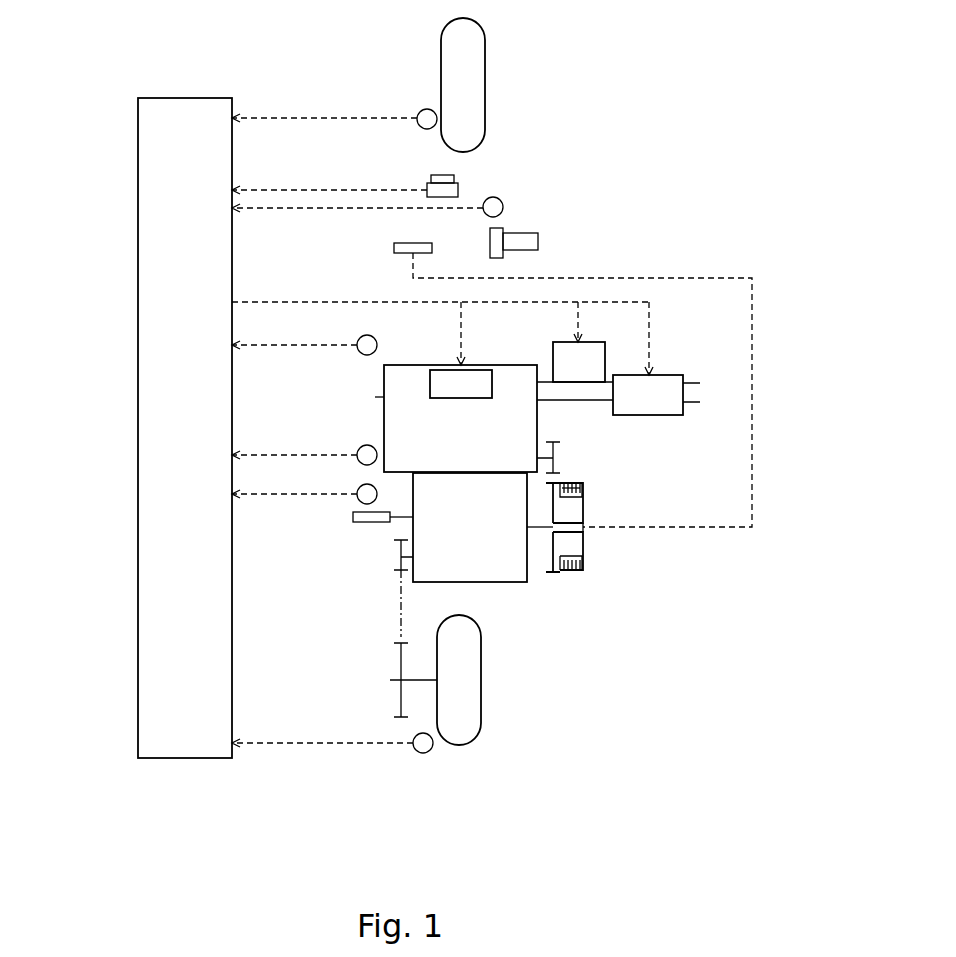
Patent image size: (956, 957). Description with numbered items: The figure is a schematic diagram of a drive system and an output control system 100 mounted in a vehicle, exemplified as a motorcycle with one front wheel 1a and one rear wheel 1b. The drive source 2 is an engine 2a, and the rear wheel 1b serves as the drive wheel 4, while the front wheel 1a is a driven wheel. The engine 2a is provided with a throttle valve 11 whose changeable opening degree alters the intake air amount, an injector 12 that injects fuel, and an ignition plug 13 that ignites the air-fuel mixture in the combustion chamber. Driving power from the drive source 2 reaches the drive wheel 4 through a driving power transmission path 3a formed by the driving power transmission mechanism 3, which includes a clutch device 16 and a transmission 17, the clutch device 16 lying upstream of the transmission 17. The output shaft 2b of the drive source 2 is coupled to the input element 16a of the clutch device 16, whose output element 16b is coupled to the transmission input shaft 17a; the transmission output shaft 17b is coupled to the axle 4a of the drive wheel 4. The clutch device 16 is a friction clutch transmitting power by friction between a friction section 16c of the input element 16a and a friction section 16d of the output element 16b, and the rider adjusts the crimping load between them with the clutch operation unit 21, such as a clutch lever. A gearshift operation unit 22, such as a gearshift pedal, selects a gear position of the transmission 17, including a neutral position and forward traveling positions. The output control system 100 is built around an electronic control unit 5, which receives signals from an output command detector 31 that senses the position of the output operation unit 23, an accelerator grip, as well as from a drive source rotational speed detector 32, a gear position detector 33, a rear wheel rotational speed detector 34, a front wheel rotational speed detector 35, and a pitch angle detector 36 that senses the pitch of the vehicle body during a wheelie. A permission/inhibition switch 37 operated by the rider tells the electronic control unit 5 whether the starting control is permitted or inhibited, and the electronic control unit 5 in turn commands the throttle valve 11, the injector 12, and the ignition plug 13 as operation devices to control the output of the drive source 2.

The output control system 100 is at (105, 100).
The front wheel 1a is at (485, 48).
The rear wheel 1b is at (482, 705).
The drive source 2 is at (530, 338).
The engine 2a is at (384, 397).
The output shaft 2b is at (558, 458).
The driving power transmission mechanism 3 is at (359, 672).
The driving power transmission path 3a is at (398, 660).
The drive wheel 4 is at (460, 745).
The axle 4a is at (395, 682).
The electronic control unit 5 is at (138, 358).
The throttle valve 11 is at (672, 375).
The injector 12 is at (605, 362).
The ignition plug 13 is at (494, 380).
The clutch device 16 is at (608, 559).
The input element 16a is at (583, 512).
The output element 16b is at (583, 552).
The friction section 16c is at (560, 490).
The friction section 16d is at (582, 485).
The transmission 17 is at (508, 582).
The transmission input shaft 17a is at (540, 532).
The transmission output shaft 17b is at (398, 560).
The clutch operation unit 21 is at (394, 248).
The gearshift operation unit 22 is at (353, 517).
The output operation unit 23 is at (538, 240).
The output command detector 31 is at (498, 198).
The drive source rotational speed detector 32 is at (360, 447).
The gear position detector 33 is at (360, 487).
The rear wheel rotational speed detector 34 is at (422, 755).
The front wheel rotational speed detector 35 is at (422, 110).
The pitch angle detector 36 is at (377, 345).
The permission/inhibition switch 37 is at (432, 175).